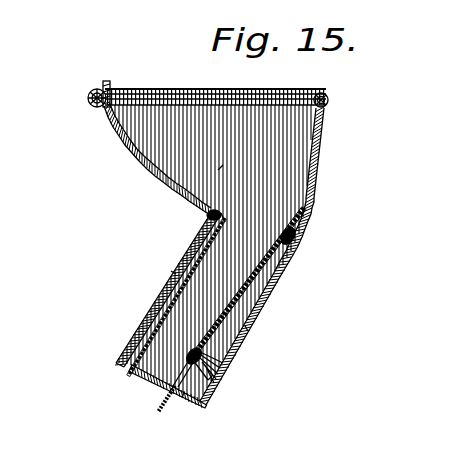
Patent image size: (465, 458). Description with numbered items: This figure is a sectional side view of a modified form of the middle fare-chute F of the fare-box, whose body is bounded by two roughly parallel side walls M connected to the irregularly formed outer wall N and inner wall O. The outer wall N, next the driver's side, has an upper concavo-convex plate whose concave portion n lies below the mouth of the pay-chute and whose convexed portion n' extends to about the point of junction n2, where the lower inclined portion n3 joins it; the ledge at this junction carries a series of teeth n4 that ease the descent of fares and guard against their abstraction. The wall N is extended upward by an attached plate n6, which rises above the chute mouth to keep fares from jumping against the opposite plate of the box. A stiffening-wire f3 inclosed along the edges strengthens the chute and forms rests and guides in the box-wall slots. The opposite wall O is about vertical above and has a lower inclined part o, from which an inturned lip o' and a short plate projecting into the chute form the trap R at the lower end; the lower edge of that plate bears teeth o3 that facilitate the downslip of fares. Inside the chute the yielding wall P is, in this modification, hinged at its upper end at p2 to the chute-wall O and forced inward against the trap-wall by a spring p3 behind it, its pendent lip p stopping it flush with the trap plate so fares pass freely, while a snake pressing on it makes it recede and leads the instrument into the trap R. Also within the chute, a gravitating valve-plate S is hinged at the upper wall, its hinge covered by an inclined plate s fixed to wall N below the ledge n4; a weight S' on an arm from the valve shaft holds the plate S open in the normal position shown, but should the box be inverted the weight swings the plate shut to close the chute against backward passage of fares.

The fare-chute F is at (215, 85).
The stiffening-wire f3 is at (333, 99).
The attached plate n6 is at (97, 80).
The outer wall N is at (170, 173).
The concave portion n is at (159, 161).
The convexed portion n' is at (214, 176).
The point of junction n2 is at (200, 205).
The lower inclined portion n3 is at (163, 263).
The teeth n4 is at (213, 208).
The side walls M is at (213, 253).
The inner wall O is at (257, 300).
The lower inclined part o is at (255, 333).
The inturned lip o' is at (184, 409).
The teeth o3 is at (180, 350).
The trap R is at (197, 392).
The gravitating plate or valve S is at (155, 306).
The weight S' is at (167, 290).
The inclined plate s is at (177, 278).
The yielding wall P is at (248, 282).
The pendent lip p is at (205, 367).
The hinge p2 is at (290, 236).
The spring p3 is at (215, 351).